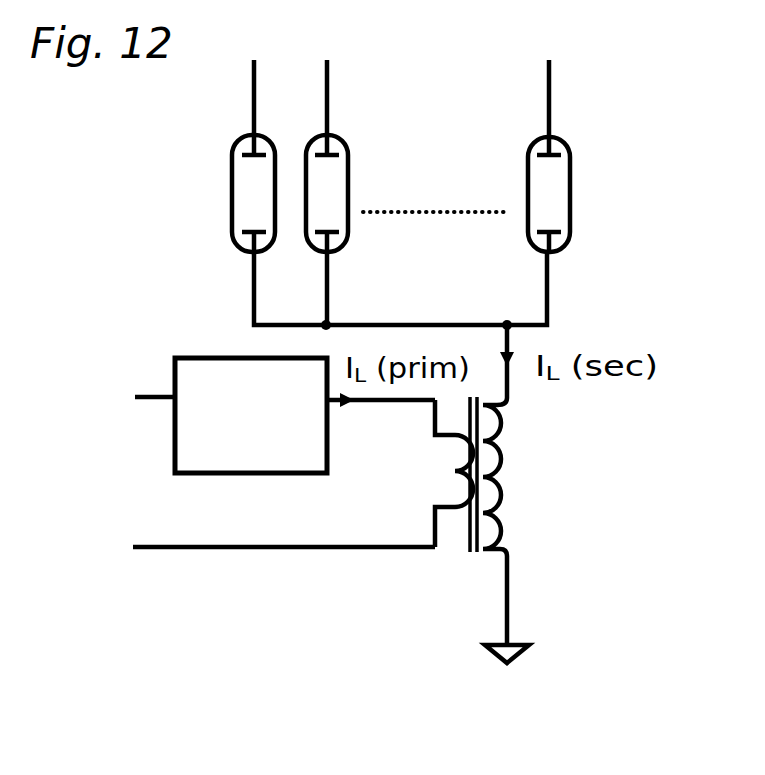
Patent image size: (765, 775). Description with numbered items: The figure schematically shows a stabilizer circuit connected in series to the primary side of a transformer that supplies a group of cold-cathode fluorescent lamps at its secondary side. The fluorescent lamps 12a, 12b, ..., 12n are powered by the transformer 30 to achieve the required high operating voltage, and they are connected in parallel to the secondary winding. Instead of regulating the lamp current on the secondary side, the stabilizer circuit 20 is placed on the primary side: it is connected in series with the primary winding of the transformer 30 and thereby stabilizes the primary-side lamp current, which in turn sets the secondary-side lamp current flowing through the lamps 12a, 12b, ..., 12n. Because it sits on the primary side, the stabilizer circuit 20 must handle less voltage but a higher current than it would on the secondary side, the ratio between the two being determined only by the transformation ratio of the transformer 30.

The fluorescent lamp 12a is at (232, 191).
The fluorescent lamp 12b is at (349, 170).
The fluorescent lamp 12n is at (572, 195).
The stabilizer circuit 20 is at (183, 452).
The transformer 30 is at (499, 505).